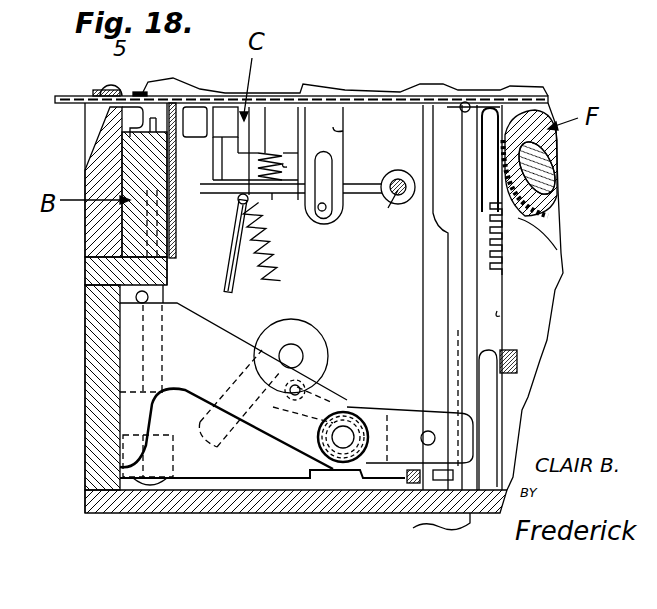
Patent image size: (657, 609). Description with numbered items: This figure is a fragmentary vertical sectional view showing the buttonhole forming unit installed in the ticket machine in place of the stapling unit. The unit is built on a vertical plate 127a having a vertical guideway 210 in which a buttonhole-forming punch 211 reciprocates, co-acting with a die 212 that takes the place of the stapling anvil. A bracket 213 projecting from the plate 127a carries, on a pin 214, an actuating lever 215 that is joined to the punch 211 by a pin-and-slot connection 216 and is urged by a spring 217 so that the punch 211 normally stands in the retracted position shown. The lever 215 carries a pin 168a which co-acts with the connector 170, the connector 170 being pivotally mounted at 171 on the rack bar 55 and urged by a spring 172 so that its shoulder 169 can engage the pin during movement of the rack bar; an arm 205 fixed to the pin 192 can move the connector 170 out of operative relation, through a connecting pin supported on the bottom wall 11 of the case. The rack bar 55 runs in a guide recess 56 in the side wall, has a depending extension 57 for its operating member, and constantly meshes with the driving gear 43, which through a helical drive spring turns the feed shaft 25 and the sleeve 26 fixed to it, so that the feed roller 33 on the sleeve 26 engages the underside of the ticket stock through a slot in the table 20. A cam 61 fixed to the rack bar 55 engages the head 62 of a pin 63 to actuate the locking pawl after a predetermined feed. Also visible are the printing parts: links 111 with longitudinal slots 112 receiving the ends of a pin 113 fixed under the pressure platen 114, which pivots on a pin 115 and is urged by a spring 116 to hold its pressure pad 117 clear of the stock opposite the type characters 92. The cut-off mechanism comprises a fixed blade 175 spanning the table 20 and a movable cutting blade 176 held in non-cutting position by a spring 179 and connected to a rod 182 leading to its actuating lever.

The bottom wall 11 is at (193, 505).
The horizontal partition or table 20 is at (404, 97).
The feed shaft 25 is at (557, 160).
The sleeve 26 is at (557, 187).
The feed roller 33 is at (547, 215).
The driving gear 43 is at (557, 252).
The rack bar 55 is at (477, 276).
The guide recess 56 is at (500, 316).
The depending extension 57 is at (418, 530).
The cam 61 is at (487, 135).
The head 62 is at (490, 408).
The pin 63 is at (540, 362).
The type characters 92 is at (345, 49).
The links 111 is at (333, 130).
The longitudinal slots 112 is at (326, 178).
The pin 113 is at (319, 212).
The pressure platen 114 is at (305, 172).
The pin 115 is at (394, 203).
The spring 116 is at (281, 167).
The pressure pad 117 is at (195, 118).
The vertical plate 127a is at (93, 345).
The pin 168a is at (427, 430).
The shoulder 169 is at (433, 224).
The connector 170 is at (458, 102).
The pivot 171 is at (468, 107).
The spring 172 is at (477, 186).
The fixed blade 175 is at (278, 115).
The movable cutting blade 176 is at (244, 130).
The spring 179 is at (275, 262).
The rod 182 is at (219, 273).
The pin 192 is at (298, 350).
The arm 205 is at (328, 363).
The vertical guideway 210 is at (108, 113).
The buttonhole-forming punch 211 is at (102, 140).
The die 212 is at (97, 90).
The bracket 213 is at (207, 333).
The pin 214 is at (343, 442).
The actuating lever 215 is at (250, 460).
The pin-and-slot connection 216 is at (148, 490).
The spring 217 is at (332, 397).